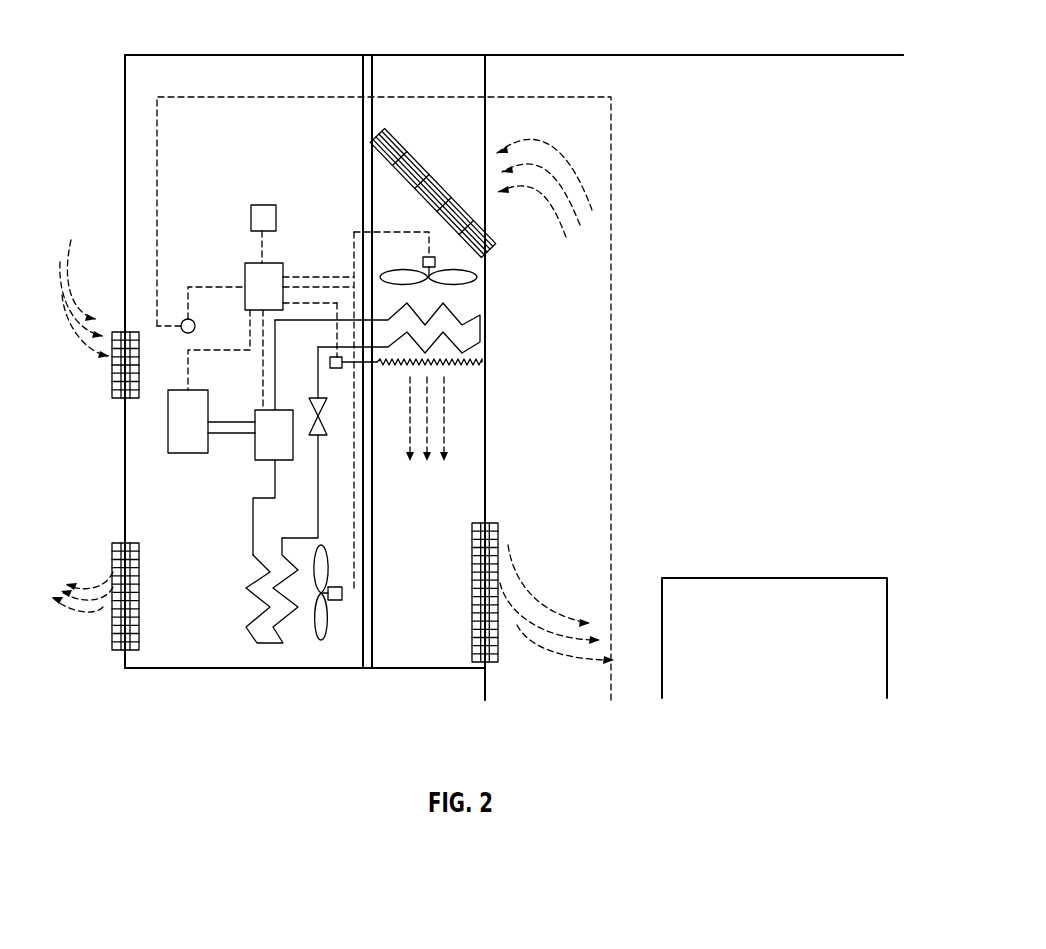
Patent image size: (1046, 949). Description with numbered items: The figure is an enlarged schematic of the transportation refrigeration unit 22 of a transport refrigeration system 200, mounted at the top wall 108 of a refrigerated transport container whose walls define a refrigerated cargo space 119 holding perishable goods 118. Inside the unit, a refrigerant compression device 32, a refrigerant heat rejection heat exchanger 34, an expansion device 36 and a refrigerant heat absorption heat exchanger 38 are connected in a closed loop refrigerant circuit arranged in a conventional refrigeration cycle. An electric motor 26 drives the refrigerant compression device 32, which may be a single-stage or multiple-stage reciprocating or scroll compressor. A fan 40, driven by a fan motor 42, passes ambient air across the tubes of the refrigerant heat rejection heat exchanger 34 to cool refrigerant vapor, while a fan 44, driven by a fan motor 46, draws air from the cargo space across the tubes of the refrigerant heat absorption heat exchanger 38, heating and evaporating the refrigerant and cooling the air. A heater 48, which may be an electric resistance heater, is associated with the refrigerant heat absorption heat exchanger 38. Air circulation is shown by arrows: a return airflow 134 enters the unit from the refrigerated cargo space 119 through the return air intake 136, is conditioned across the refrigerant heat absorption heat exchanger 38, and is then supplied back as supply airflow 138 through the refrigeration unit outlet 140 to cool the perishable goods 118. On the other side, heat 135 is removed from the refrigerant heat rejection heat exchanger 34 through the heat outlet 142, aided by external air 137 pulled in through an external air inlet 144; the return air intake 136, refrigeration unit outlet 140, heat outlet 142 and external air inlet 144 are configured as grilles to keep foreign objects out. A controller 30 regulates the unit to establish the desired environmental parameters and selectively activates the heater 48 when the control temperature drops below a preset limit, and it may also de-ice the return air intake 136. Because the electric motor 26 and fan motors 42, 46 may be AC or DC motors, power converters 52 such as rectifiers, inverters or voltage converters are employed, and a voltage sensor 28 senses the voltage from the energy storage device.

The transport refrigeration system 200 is at (98, 99).
The transportation refrigeration unit 22 is at (212, 55).
The top wall 108 is at (708, 55).
The refrigerated cargo space 119 is at (795, 237).
The perishable goods 118 is at (713, 578).
The return air intake 136 is at (422, 177).
The return airflow 134 is at (576, 250).
The fan 44 is at (477, 280).
The fan motor 46 is at (423, 260).
The refrigerant heat absorption heat exchanger 38 is at (482, 325).
The heater 48 is at (483, 360).
The expansion device 36 is at (325, 430).
The power converter 52 is at (245, 275).
The controller 30 is at (276, 227).
The voltage sensor 28 is at (197, 328).
The electric motor 26 is at (168, 452).
The refrigerant compression device 32 is at (255, 445).
The refrigerant heat rejection heat exchanger 34 is at (273, 645).
The fan 40 is at (320, 637).
The fan motor 42 is at (342, 595).
The external air inlet 144 is at (110, 395).
The external air 137 is at (62, 295).
The heat outlet 142 is at (112, 549).
The heat 135 is at (67, 608).
The refrigeration unit outlet 140 is at (472, 535).
The supply airflow 138 is at (518, 577).